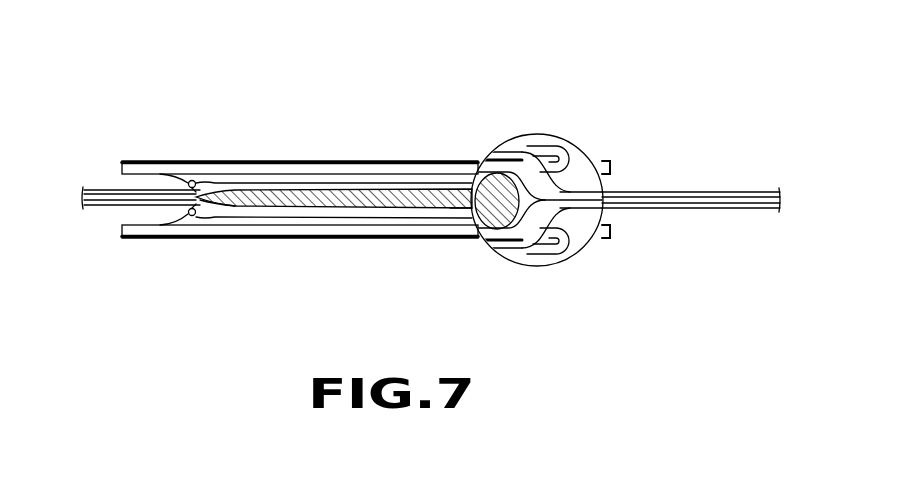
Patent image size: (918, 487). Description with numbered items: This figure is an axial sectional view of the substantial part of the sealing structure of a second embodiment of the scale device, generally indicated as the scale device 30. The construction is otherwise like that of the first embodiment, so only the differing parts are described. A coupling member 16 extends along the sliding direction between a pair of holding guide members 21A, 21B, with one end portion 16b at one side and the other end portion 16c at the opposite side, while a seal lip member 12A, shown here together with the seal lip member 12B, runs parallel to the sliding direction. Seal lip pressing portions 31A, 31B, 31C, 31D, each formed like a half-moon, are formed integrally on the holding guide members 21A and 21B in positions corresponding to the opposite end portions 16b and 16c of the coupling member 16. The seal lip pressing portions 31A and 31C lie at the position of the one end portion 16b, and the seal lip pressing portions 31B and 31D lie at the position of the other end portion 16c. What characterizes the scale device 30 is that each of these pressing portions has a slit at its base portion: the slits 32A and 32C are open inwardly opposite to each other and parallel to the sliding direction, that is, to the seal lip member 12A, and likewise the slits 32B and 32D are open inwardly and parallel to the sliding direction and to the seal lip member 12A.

The scale device 30 is at (402, 32).
The seal lip member 12A is at (98, 189).
The second wire portion 12B is at (95, 206).
The coupling member 16 is at (387, 210).
The one end portion of the coupling member 16b is at (230, 210).
The other end portion of the coupling member 16c is at (466, 232).
The holding guide member 21A is at (384, 172).
The holding guide member 21B is at (317, 228).
The seal lip pressing portion 31A is at (191, 180).
The seal lip pressing portion 31B is at (565, 162).
The seal lip pressing portion 31C is at (192, 216).
The seal lip pressing portion 31D is at (560, 236).
The slit 32A is at (208, 179).
The slit 32B is at (558, 157).
The slit 32C is at (206, 222).
The slit 32D is at (538, 243).